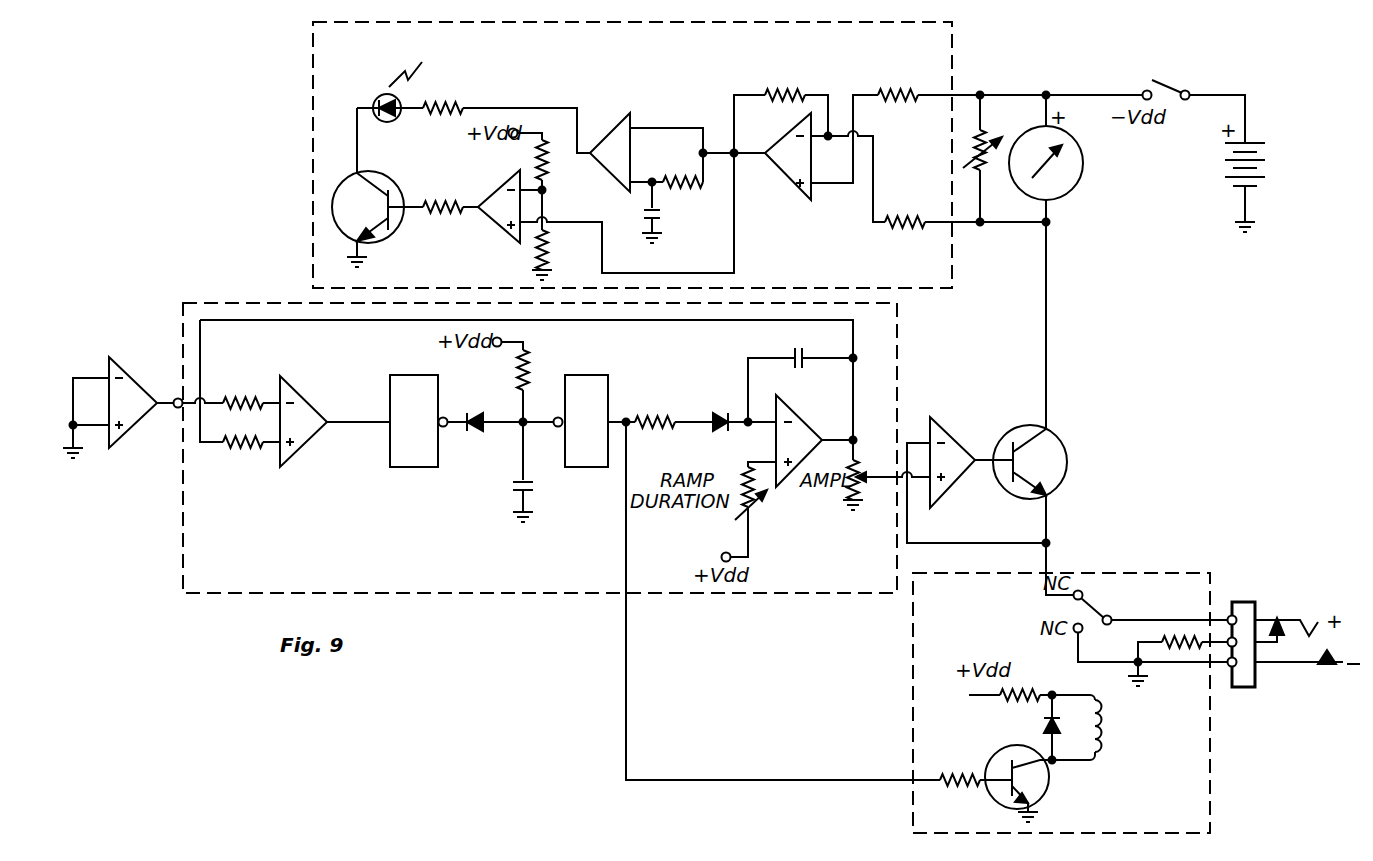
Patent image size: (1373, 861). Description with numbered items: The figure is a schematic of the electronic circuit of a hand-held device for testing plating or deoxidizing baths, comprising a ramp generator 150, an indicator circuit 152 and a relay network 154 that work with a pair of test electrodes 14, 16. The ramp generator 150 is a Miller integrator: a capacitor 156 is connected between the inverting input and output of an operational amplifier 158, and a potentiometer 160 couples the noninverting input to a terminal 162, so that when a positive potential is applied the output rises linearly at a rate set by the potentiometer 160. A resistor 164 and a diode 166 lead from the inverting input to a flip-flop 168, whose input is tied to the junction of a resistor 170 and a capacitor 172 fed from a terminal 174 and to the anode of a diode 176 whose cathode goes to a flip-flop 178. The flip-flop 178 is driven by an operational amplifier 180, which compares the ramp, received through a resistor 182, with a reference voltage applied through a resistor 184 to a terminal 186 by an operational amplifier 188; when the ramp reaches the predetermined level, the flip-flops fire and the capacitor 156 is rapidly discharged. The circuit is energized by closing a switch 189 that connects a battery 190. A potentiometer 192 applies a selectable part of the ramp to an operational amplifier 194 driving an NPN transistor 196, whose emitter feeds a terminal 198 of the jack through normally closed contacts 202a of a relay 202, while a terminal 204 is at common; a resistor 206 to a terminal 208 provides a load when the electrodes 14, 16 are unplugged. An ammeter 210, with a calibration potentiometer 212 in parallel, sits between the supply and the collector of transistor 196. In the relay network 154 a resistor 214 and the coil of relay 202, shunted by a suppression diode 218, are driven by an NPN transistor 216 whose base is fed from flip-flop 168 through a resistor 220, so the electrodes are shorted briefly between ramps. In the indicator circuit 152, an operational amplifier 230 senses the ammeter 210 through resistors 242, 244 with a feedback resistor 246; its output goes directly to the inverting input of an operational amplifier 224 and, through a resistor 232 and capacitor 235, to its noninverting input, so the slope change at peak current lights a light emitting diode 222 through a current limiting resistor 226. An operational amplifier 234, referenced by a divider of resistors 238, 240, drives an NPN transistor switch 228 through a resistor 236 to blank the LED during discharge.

The indicator circuit 152 is at (890, 49).
The light emitting diode 222 is at (396, 120).
The current limiting resistor 226 is at (447, 101).
The NPN transistor switch 228 is at (398, 230).
The resistor 236 is at (441, 198).
The operational amplifier 234 is at (504, 243).
The resistor 238 is at (548, 172).
The resistor 240 is at (548, 240).
The operational amplifier 224 is at (618, 112).
The resistor 232 is at (668, 176).
The capacitor 235 is at (664, 212).
The operational amplifier 230 is at (792, 203).
The feedback resistor 246 is at (800, 78).
The resistor 242 is at (910, 80).
The resistor 244 is at (902, 216).
The potentiometer 212 is at (986, 128).
The ammeter 210 is at (1070, 192).
The switch 189 is at (1175, 88).
The battery 190 is at (1225, 166).
The ramp generator 150 is at (540, 448).
The operational amplifier 188 is at (122, 358).
The terminal 186 is at (172, 410).
The resistor 184 is at (243, 396).
The resistor 182 is at (243, 449).
The operational amplifier 180 is at (300, 393).
The flip-flop 178 is at (405, 375).
The diode 176 is at (476, 433).
The terminal 174 is at (500, 345).
The resistor 170 is at (530, 352).
The capacitor 172 is at (510, 484).
The flip-flop 168 is at (585, 375).
The resistor 164 is at (655, 414).
The diode 166 is at (720, 412).
The capacitor 156 is at (800, 345).
The operational amplifier 158 is at (812, 418).
The potentiometer 160 is at (752, 520).
The terminal 162 is at (720, 557).
The potentiometer 192 is at (862, 456).
The operational amplifier 194 is at (950, 428).
The NPN transistor 196 is at (1064, 438).
The relay network 154 is at (1185, 828).
The normally closed contacts 202a is at (1098, 608).
The resistor 206 is at (1182, 636).
The terminal 208 is at (1222, 648).
The resistor 214 is at (1022, 690).
The suppression diode 218 is at (1040, 728).
The relay 202 is at (1102, 742).
The resistor 220 is at (956, 773).
The NPN transistor 216 is at (1040, 786).
The terminal 198 is at (1232, 610).
The terminal 204 is at (1232, 672).
The electrode 14 is at (1321, 596).
The electrode 16 is at (1320, 690).